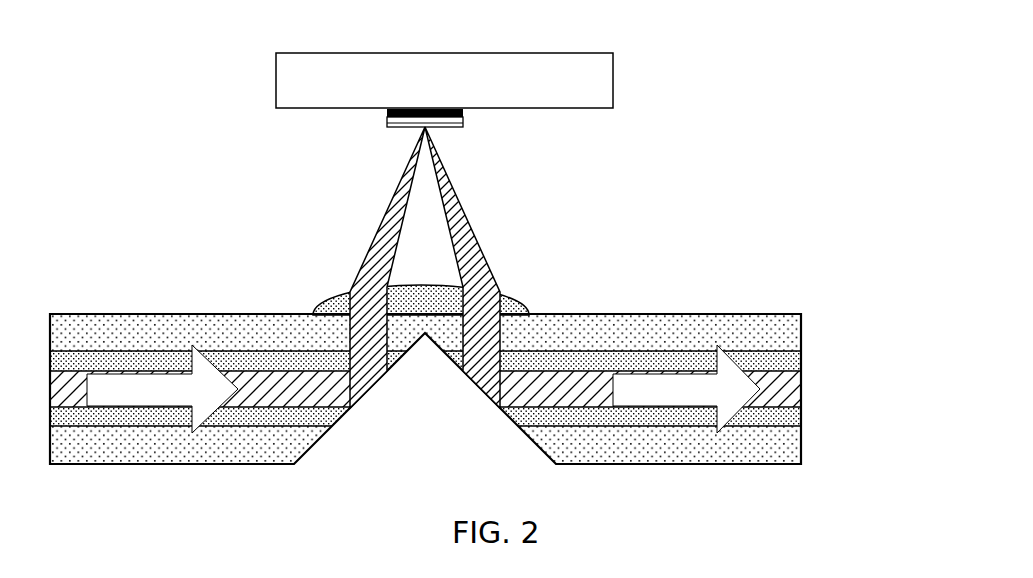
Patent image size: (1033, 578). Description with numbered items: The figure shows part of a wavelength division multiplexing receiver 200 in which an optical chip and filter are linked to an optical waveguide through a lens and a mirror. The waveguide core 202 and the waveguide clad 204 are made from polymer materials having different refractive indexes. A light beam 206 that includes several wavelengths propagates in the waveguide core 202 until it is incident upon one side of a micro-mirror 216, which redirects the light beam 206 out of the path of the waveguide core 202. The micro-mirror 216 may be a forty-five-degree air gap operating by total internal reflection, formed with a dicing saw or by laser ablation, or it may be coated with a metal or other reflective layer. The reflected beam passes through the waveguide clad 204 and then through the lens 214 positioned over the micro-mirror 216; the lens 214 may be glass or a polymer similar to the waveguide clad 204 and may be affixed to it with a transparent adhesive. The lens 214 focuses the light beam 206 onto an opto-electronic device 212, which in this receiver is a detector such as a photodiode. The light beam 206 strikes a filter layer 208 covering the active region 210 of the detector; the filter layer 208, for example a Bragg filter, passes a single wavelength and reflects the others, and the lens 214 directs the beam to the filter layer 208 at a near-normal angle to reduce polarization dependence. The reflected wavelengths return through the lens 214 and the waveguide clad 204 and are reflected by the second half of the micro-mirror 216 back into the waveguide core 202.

The wavelength division multiplexing receiver 200 is at (488, 265).
The waveguide core 202 is at (801, 416).
The waveguide clad 204 is at (801, 323).
The light beam 206 is at (801, 387).
The filter layer 208 is at (465, 118).
The active region 210 is at (387, 118).
The opto-electronic device 212 is at (276, 83).
The lens 214 is at (520, 307).
The micro-mirror 216 is at (425, 369).